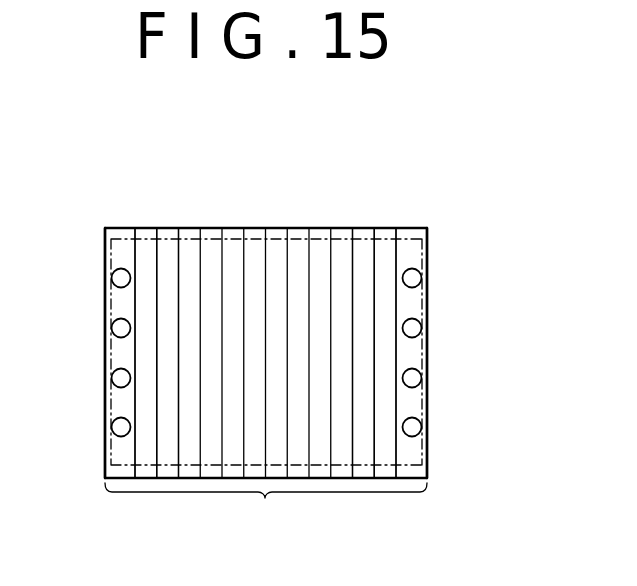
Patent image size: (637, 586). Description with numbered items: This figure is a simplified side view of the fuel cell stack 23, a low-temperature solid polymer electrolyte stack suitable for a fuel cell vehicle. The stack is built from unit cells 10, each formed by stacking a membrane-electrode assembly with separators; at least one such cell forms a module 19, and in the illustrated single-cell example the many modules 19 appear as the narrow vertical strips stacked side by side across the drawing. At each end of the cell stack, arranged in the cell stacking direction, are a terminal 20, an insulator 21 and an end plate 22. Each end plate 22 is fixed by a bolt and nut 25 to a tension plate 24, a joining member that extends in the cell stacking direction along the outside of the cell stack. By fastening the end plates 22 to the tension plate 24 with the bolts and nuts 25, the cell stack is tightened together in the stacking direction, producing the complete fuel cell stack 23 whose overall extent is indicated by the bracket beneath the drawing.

The unit cell 10 is at (431, 352).
The module 19 is at (197, 230).
The terminal 20 is at (172, 233).
The insulator 21 is at (120, 237).
The end plate 22 is at (118, 234).
The fuel cell stack 23 is at (266, 509).
The tension plate 24 is at (108, 308).
The bolt and nut 25 is at (120, 279).